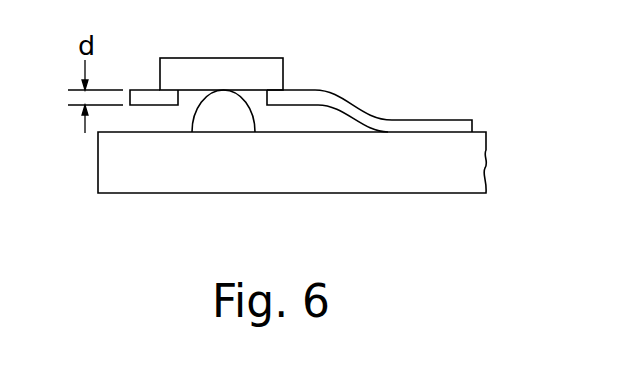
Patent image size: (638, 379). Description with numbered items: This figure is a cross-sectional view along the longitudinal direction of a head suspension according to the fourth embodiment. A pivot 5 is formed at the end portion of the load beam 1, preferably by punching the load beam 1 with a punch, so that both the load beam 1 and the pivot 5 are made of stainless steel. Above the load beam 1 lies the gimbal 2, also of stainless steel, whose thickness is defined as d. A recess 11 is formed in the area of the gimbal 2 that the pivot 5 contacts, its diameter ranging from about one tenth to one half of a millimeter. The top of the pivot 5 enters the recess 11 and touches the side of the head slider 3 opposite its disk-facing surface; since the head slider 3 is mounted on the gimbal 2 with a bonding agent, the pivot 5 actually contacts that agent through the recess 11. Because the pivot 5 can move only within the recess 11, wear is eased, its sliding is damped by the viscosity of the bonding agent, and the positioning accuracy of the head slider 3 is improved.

The load beam 1 is at (443, 178).
The gimbal 2 is at (357, 107).
The head slider 3 is at (255, 68).
The pivot 5 is at (225, 123).
The recess 11 is at (253, 97).